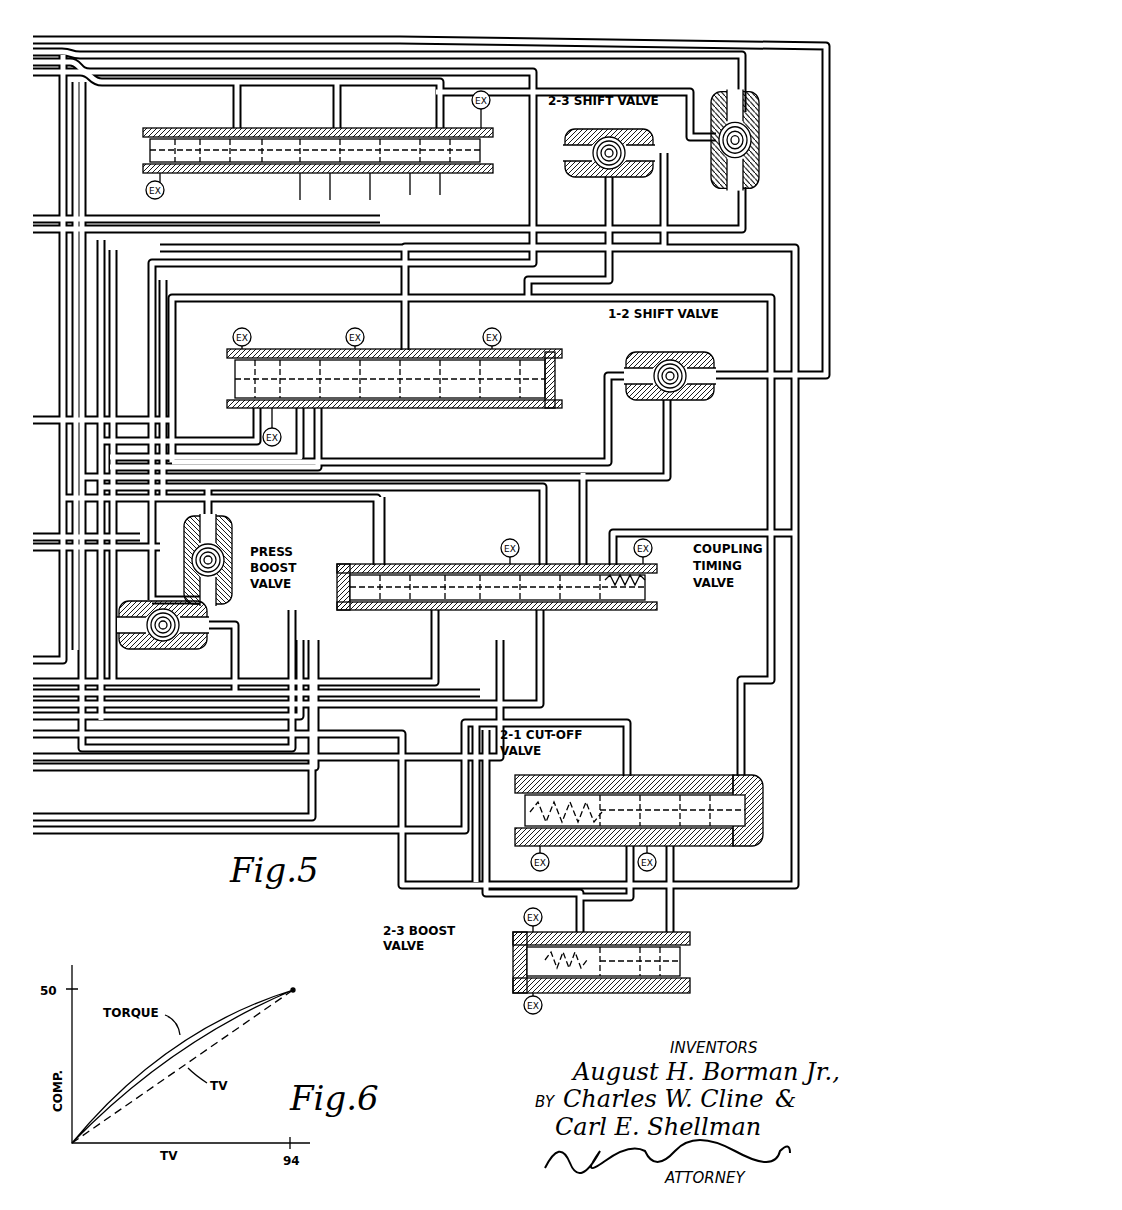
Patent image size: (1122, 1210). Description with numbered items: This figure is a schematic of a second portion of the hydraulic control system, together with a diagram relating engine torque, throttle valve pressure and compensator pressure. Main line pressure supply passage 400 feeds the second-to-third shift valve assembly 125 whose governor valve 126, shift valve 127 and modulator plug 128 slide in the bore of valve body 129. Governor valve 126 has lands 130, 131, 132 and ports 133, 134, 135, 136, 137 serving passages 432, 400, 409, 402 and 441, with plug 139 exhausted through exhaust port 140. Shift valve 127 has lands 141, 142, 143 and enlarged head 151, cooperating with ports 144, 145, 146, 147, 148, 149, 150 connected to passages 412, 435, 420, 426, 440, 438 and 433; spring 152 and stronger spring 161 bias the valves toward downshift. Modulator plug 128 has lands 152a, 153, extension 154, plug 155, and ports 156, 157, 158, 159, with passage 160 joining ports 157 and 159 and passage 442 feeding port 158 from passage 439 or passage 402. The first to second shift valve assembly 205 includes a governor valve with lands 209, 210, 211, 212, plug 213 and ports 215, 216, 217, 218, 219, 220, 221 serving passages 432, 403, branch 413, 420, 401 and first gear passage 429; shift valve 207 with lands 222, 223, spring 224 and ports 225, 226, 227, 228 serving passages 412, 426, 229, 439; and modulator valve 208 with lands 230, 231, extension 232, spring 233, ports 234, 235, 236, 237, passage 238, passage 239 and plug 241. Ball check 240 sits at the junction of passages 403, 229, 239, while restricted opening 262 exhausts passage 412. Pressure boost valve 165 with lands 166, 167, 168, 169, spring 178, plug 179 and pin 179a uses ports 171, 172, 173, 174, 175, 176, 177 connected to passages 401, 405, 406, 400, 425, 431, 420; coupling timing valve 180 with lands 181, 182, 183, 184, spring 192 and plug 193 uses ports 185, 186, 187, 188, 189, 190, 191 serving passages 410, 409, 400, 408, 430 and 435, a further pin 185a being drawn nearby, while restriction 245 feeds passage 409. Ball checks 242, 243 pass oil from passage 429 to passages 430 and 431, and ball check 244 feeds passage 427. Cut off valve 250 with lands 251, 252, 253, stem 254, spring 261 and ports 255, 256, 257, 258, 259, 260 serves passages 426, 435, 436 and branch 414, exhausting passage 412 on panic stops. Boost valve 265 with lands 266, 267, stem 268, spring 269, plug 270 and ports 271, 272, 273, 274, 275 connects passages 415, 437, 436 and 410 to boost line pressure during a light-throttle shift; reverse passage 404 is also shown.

The line drop feed passage 405 is at (302, 265).
The intermediate range line pressure supply passage 402 is at (442, 49).
The reverse pressure supply passage 404 is at (445, 210).
The low range pressure supply passage 403 is at (371, 144).
The front clutch supply passage 420 is at (275, 438).
The shift throttle valve passage 440 is at (365, 17).
The valve body 129 is at (112, 100).
The exhaust port 140 is at (148, 95).
The port 134 is at (186, 95).
The land 131 is at (217, 92).
The port 137 is at (255, 95).
The port 144 is at (291, 95).
The port 147 is at (323, 90).
The port 149 is at (357, 92).
The port 150 is at (385, 92).
The spring 161 is at (410, 92).
The 2-3 shift valve assembly 125 is at (100, 125).
The land 130 is at (170, 110).
The port 135 is at (207, 107).
The land 132 is at (258, 110).
The port 145 is at (286, 110).
The land 142 is at (320, 110).
The land 143 is at (355, 110).
The enlarged head 151 is at (382, 110).
The plug 139 is at (110, 148).
The port 133 is at (112, 167).
The port 136 is at (235, 195).
The governor valve 126 is at (187, 200).
The land 141 is at (282, 200).
The port 146 is at (305, 200).
The port 148 is at (340, 200).
The shift valve 127 is at (318, 153).
The extension 154 is at (392, 185).
The spring 152 is at (385, 207).
The port 159 is at (407, 207).
The land 152a is at (432, 207).
The port 158 is at (442, 193).
The port 157 is at (466, 207).
The port 156 is at (493, 203).
The plug 155 is at (513, 130).
The land 153 is at (513, 147).
The modulator plug 128 is at (510, 165).
The modulated throttle valve pressure delivery passage 160 is at (505, 100).
The ball check 240 is at (578, 145).
The passage 229 is at (529, 191).
The pressure supply passage 442 is at (695, 175).
The restriction 245 is at (675, 315).
The passage 439 is at (457, 232).
The second to third passage 435 is at (519, 563).
The passage 239 is at (566, 268).
The throttle valve pressure delivery passage 426 is at (425, 476).
The G-1 governor pressure delivery passage 432 is at (120, 397).
The part throttle TV passage 438 is at (42, 262).
The main line pressure supply passage 400 is at (310, 447).
The third gear coupling feed passage 409 is at (281, 408).
The overrun band supply passage 441 is at (88, 402).
The second to first gear signal passage 412 is at (198, 529).
The G-2 governor passage 433 is at (218, 425).
The port 215 is at (215, 325).
The land 210 is at (248, 320).
The port 216 is at (268, 330).
The port 218 is at (300, 320).
The port 217 is at (300, 337).
The land 211 is at (325, 330).
The land 212 is at (345, 322).
The land 222 is at (362, 335).
The port 219 is at (333, 345).
The land 223 is at (435, 322).
The port 234 is at (468, 322).
The port 236 is at (500, 322).
The extension 232 is at (445, 340).
The land 231 is at (475, 340).
The ball check valve 242 is at (698, 335).
The plug 213 is at (200, 345).
The land 209 is at (210, 388).
The modulator valve 208 is at (378, 406).
The branch 413 is at (330, 383).
The first to second shift valve 207 is at (413, 383).
The restricted opening 262 is at (228, 428).
The exhaust port 221 is at (357, 428).
The port 220 is at (358, 447).
The port 226 is at (392, 428).
The port 228 is at (425, 428).
The port 225 is at (395, 447).
The port 227 is at (430, 447).
The spring 233 is at (450, 428).
The spring 224 is at (465, 447).
The exhaust port 235 is at (517, 428).
The modulated throttle valve pressure delivery passage 238 is at (510, 447).
The land 230 is at (548, 443).
The port 237 is at (575, 425).
The plug 241 is at (575, 367).
The first to second shift valve assembly 205 is at (590, 392).
The first gear passage 429 is at (635, 427).
The passage 430 is at (423, 496).
The ball check valve 244 is at (160, 575).
The passage 427 is at (152, 660).
The drive range pressure supply passage 401 is at (228, 656).
The land 166 is at (368, 535).
The port 173 is at (400, 513).
The land 167 is at (385, 540).
The port 175 is at (420, 543).
The port 176 is at (445, 543).
The spring 178 is at (432, 528).
The pin 179a is at (465, 510).
The port 177 is at (470, 532).
The port 185a is at (497, 510).
The port 185 is at (480, 545).
The port 186 is at (525, 545).
The port 189 is at (563, 543).
The land 184 is at (589, 540).
The plug 193 is at (680, 605).
The port 191 is at (625, 632).
The spring 192 is at (652, 627).
The port 190 is at (590, 622).
The port 171 is at (352, 622).
The port 172 is at (374, 622).
The pressure boost valve 165 is at (365, 638).
The port 174 is at (396, 625).
The land 168 is at (394, 640).
The line boost pressure passage 425 is at (224, 665).
The line drop signal passage 406 is at (215, 726).
The pressure boost passage 431 is at (335, 652).
The plug 179 is at (450, 622).
The land 169 is at (450, 637).
The land 181 is at (483, 625).
The land 182 is at (502, 625).
The coupling timing valve 180 is at (493, 640).
The land 183 is at (540, 625).
The port 187 is at (540, 640).
The port 188 is at (540, 660).
The signal passage 408 is at (359, 669).
The coupling feed passage 410 is at (363, 798).
The branch 414 is at (655, 695).
The port 257 is at (672, 718).
The port 259 is at (652, 740).
The land 252 is at (660, 757).
The port 256 is at (708, 753).
The land 251 is at (775, 755).
The port 260 is at (563, 760).
The land 253 is at (597, 750).
The stem 254 is at (507, 805).
The second to third gear pressure boost passage 437 is at (370, 748).
The spring 261 is at (570, 862).
The second to first gear signal passage 415 is at (600, 862).
The port 255 is at (727, 868).
The second to first cut off valve 250 is at (765, 868).
The port 258 is at (693, 900).
The ball check valve 243 is at (118, 652).
The port 274 is at (565, 905).
The land 266 is at (600, 905).
The second to third gear pressure transfer passage 436 is at (735, 945).
The plug 270 is at (485, 957).
The land 267 is at (725, 975).
The second to third speed pressure boost valve 265 is at (745, 998).
The port 275 is at (480, 1007).
The spring 269 is at (568, 1010).
The stem 268 is at (590, 1022).
The port 271 is at (615, 1010).
The port 272 is at (645, 1022).
The port 273 is at (682, 1012).